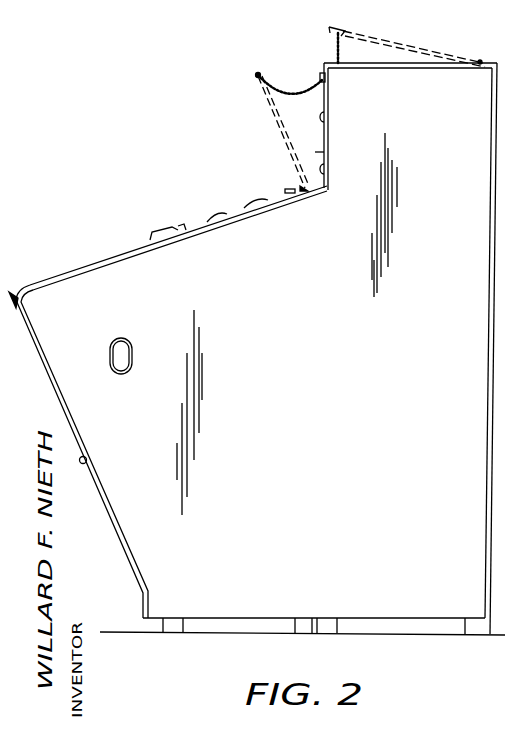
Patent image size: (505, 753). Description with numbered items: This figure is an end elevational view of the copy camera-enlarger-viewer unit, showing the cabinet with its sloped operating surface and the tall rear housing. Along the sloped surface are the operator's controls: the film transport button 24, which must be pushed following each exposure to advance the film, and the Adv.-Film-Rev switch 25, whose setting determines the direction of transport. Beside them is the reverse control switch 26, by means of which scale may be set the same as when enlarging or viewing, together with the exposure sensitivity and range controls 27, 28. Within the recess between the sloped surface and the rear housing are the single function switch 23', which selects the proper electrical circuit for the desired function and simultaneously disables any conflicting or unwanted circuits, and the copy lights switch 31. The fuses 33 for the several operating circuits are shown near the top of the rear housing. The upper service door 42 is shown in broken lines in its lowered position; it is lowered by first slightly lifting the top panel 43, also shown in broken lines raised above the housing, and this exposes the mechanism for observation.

The top panel 43 is at (411, 10).
The fuses 33 is at (325, 78).
The upper service door 42 is at (283, 122).
The function switch 23' is at (305, 115).
The copy lights switch 31 is at (317, 152).
The reverse control switch 26 is at (290, 188).
The exposure sensitivity control 27 is at (258, 198).
The exposure range control 28 is at (226, 212).
The Adv.-Film-Rev switch 25 is at (194, 222).
The film transport button 24 is at (182, 228).